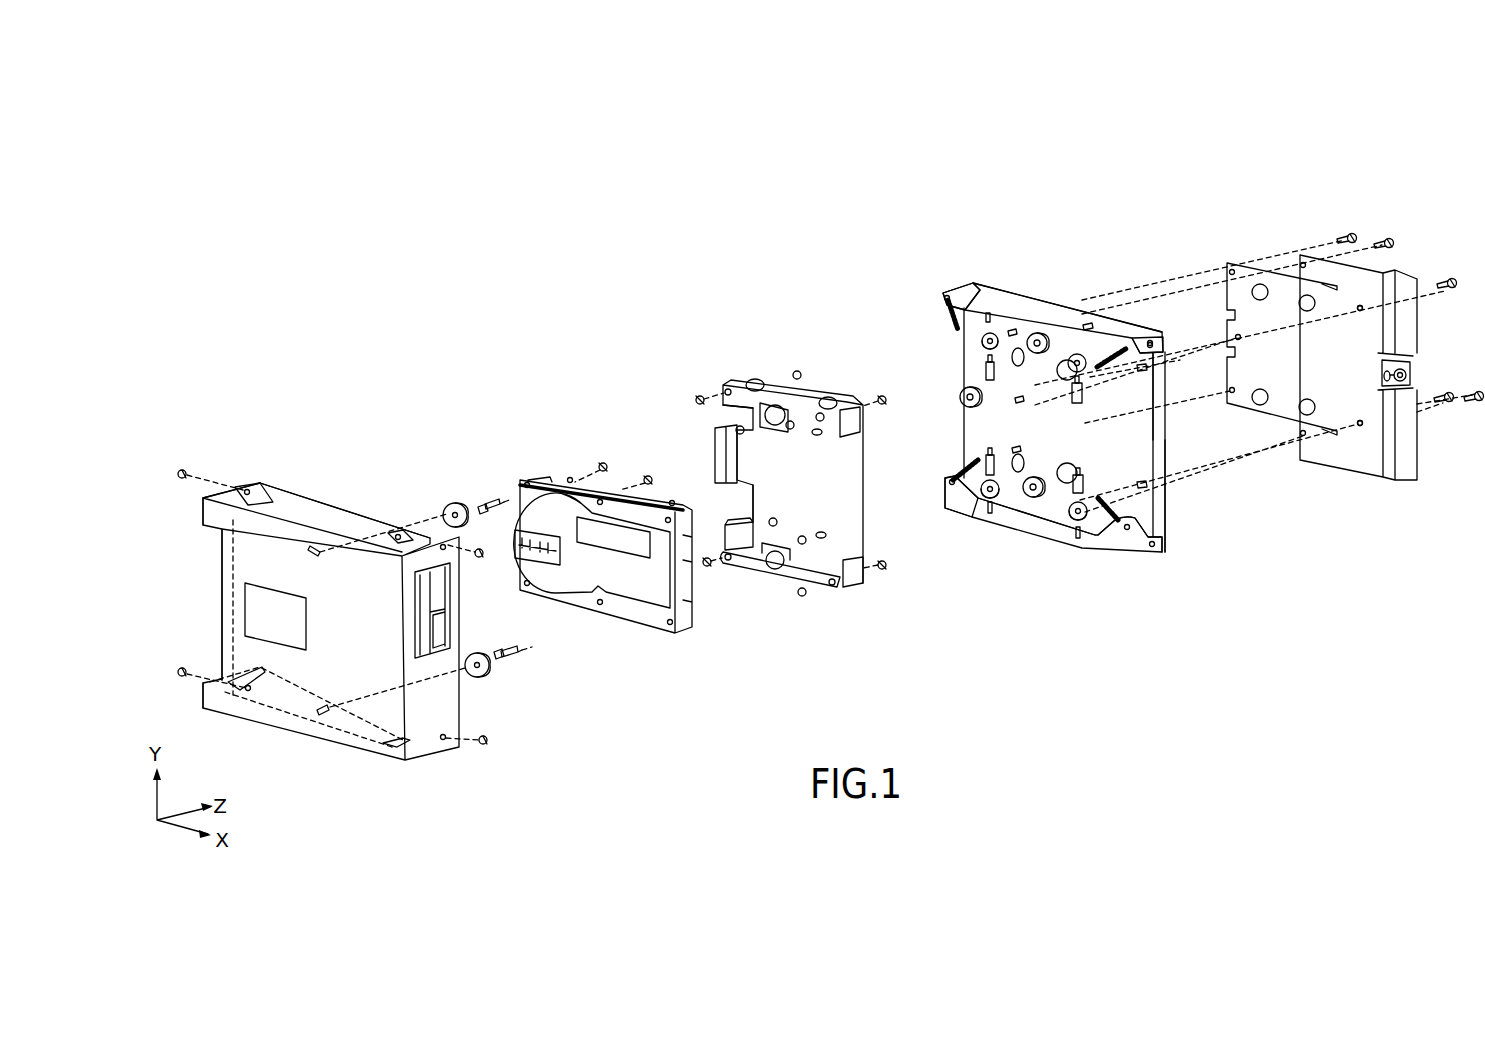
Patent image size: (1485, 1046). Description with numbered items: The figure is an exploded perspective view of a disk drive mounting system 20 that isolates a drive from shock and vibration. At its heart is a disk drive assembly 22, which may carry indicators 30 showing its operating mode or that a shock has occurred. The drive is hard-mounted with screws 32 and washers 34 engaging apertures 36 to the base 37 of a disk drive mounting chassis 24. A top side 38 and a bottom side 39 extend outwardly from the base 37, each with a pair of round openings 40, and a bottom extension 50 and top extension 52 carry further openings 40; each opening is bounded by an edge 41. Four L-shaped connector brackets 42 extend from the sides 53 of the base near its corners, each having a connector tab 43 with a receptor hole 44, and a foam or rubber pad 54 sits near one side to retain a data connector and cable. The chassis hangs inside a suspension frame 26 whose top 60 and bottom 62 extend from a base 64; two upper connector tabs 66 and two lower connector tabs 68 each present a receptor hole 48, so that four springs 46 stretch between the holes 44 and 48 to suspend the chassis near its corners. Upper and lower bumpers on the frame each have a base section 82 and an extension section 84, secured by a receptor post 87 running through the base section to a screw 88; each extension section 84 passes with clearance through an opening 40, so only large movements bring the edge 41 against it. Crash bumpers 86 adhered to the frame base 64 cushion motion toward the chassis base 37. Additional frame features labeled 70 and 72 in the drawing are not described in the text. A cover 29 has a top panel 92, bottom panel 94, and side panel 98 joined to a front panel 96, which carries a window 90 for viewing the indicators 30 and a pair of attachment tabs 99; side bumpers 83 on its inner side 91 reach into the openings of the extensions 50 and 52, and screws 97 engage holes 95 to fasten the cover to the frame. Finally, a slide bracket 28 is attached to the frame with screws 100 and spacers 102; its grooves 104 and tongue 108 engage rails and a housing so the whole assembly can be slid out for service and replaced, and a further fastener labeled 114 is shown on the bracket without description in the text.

The disk drive mounting system 20 is at (1309, 181).
The disk drive assembly 22 is at (527, 471).
The disk drive mounting chassis 24 is at (723, 385).
The suspension frame 26 is at (946, 290).
The slide bracket 28 is at (1233, 260).
The cover 29 is at (252, 481).
The indicators 30 is at (512, 539).
The screws 32 is at (601, 463).
The washers 34 is at (797, 371).
The apertures 36 is at (774, 518).
The base 37 is at (817, 505).
The top side 38 is at (809, 382).
The bottom side 39 is at (778, 588).
The openings 40 is at (758, 379).
The edge 41 is at (748, 384).
The L-shaped connector brackets 42 is at (725, 530).
The connector tab 43 is at (820, 436).
The receptor hole 44 is at (745, 527).
The springs 46 is at (948, 317).
The receptor hole 48 is at (1143, 334).
The bottom extension 50 is at (735, 563).
The top extension 52 is at (697, 398).
The sides 53 is at (736, 430).
The foam or rubber pad 54 is at (715, 457).
The top 60 is at (1010, 290).
The bottom 62 is at (1027, 546).
The base 64 is at (1168, 397).
The upper connector tabs 66 is at (1135, 336).
The lower connector tabs 68 is at (965, 515).
The side rail 70 is at (1168, 443).
The grommet 72 is at (960, 398).
The base section 82 is at (443, 512).
The side bumpers 83 is at (441, 498).
The extension section 84 is at (492, 500).
The crash bumpers 86 is at (1037, 333).
The receptor post 87 is at (312, 549).
The screw 88 is at (478, 505).
The window 90 is at (259, 630).
The inner side 91 is at (344, 530).
The top panel 92 is at (302, 512).
The bottom panel 94 is at (203, 503).
The holes 95 is at (250, 492).
The front panel 96 is at (232, 550).
The screws 97 is at (183, 470).
The side panel 98 is at (432, 740).
The attachment tabs 99 is at (228, 690).
The screws 100 is at (1387, 236).
The spacers 102 is at (1020, 401).
The grooves 104 is at (1357, 312).
The tongue 108 is at (1241, 322).
The screw 114 is at (1410, 372).